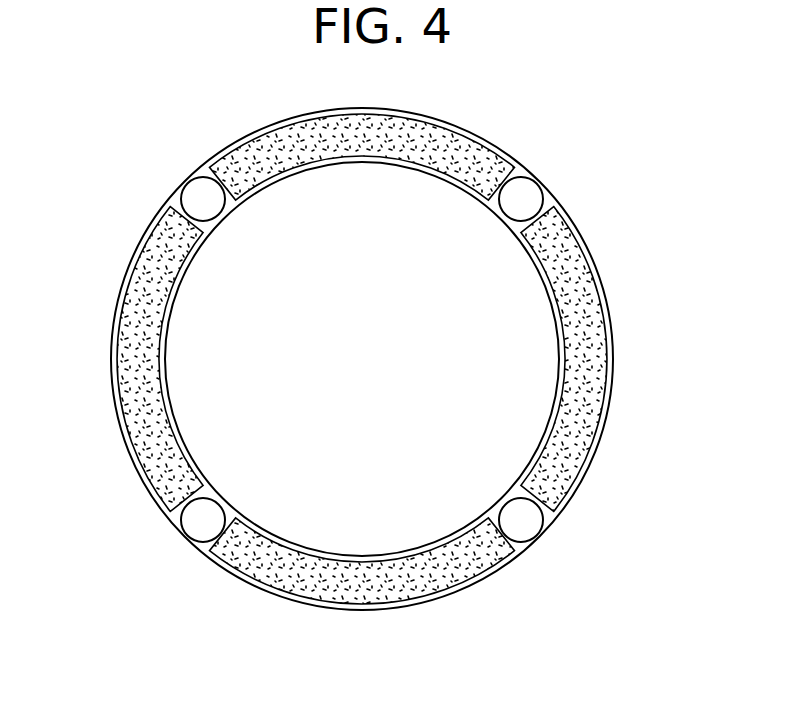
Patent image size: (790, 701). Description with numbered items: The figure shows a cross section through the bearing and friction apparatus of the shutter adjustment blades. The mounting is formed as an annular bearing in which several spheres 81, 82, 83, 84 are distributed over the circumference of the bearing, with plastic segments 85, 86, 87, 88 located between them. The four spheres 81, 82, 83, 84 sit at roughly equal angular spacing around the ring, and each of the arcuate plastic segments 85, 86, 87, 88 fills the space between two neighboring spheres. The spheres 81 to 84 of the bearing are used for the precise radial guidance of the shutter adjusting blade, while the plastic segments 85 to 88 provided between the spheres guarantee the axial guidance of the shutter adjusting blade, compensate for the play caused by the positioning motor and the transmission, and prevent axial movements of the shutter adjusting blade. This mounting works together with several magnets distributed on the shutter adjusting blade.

The sphere 81 is at (197, 198).
The sphere 82 is at (527, 197).
The sphere 83 is at (527, 534).
The sphere 84 is at (198, 530).
The plastic segment 85 is at (130, 355).
The plastic segment 86 is at (463, 140).
The plastic segment 87 is at (600, 349).
The plastic segment 88 is at (257, 588).